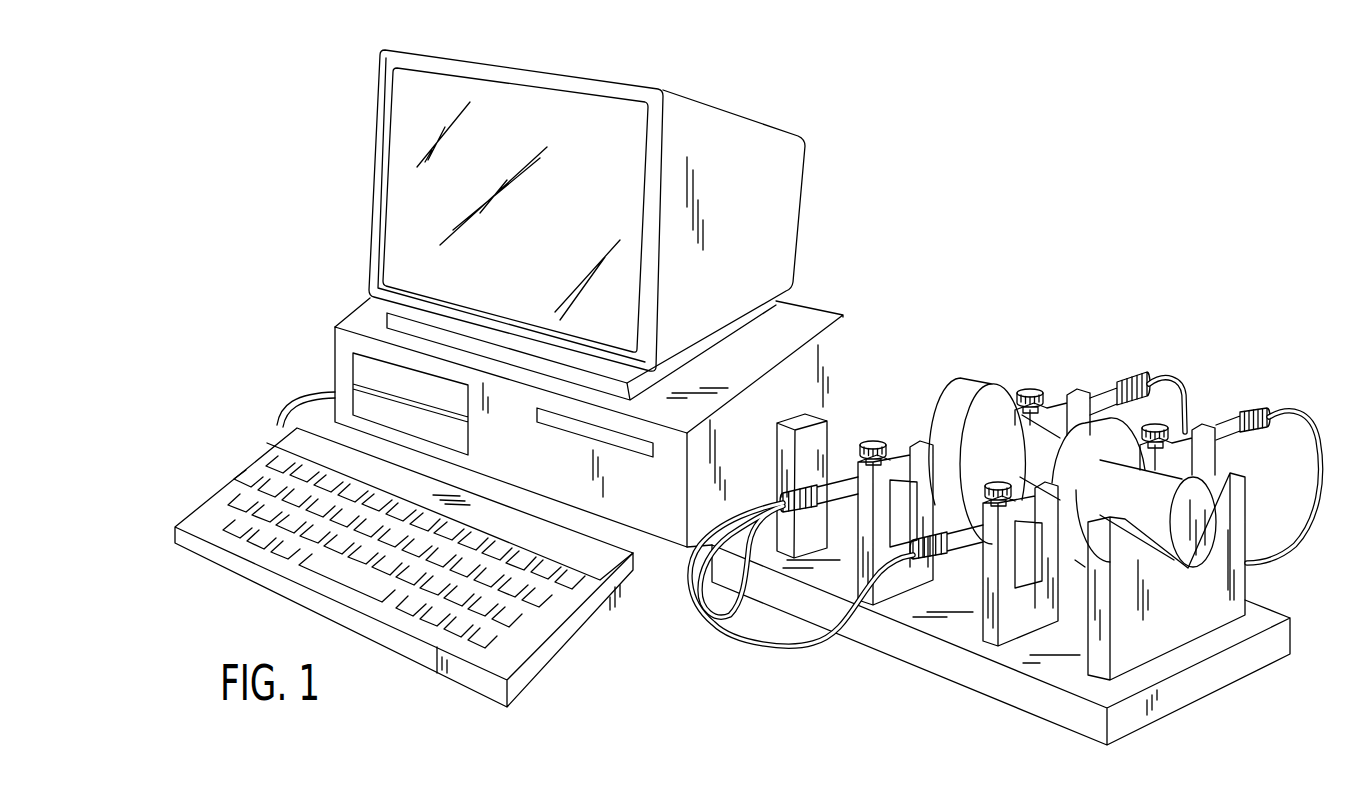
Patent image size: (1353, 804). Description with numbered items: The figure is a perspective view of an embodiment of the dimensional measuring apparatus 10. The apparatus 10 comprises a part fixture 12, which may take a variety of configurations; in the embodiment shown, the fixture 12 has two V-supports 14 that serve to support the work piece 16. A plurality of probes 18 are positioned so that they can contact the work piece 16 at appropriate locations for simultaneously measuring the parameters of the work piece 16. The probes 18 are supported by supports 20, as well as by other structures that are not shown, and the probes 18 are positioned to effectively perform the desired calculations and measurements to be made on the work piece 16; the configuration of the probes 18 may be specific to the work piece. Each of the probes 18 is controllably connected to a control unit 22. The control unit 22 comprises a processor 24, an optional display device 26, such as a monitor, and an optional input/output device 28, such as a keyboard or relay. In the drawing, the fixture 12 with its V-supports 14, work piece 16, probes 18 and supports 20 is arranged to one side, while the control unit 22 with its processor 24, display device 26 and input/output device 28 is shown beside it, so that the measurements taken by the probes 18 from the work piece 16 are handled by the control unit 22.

The dimensional measuring apparatus 10 is at (1053, 310).
The part fixture 12 is at (1263, 675).
The V-supports 14 is at (800, 418).
The work piece 16 is at (1000, 378).
The probes 18 is at (860, 457).
The supports 20 is at (917, 440).
The control unit 22 is at (803, 210).
The processor 24 is at (810, 303).
The display device 26 is at (727, 110).
The input/output device 28 is at (582, 633).